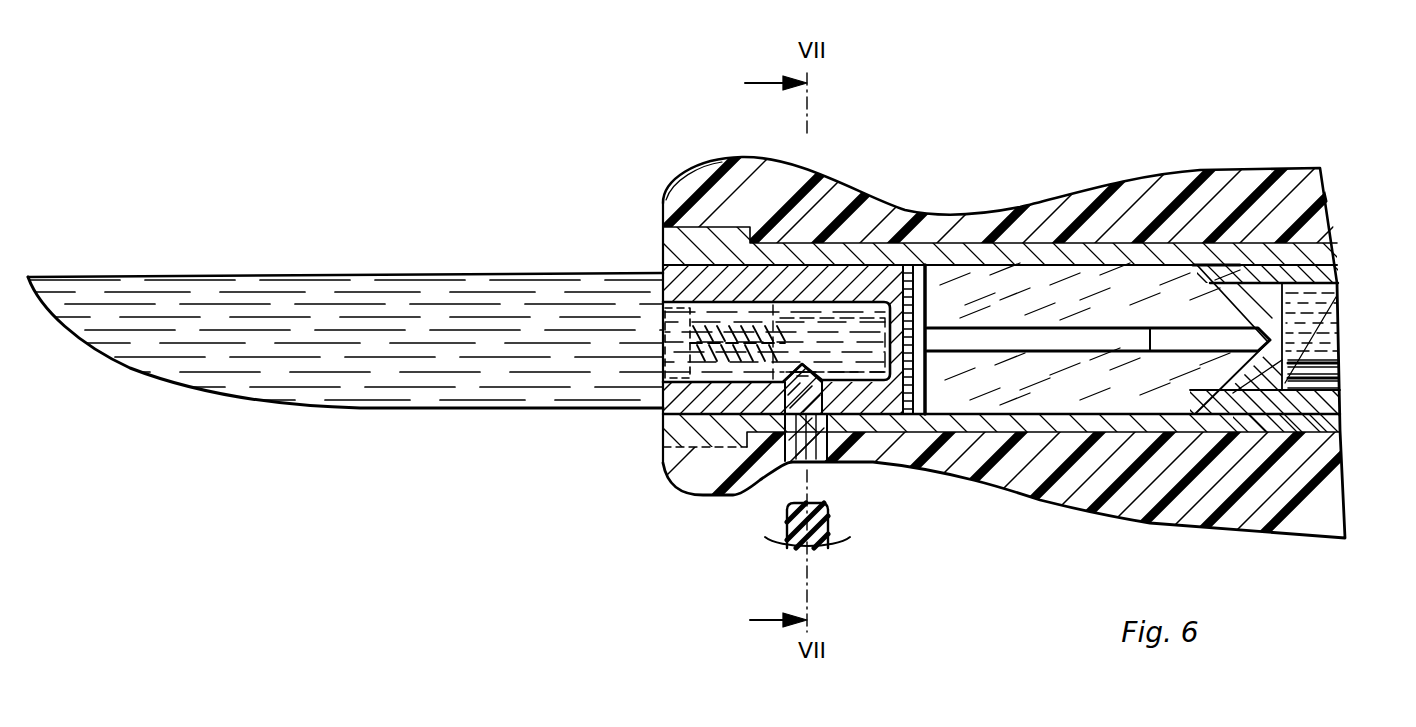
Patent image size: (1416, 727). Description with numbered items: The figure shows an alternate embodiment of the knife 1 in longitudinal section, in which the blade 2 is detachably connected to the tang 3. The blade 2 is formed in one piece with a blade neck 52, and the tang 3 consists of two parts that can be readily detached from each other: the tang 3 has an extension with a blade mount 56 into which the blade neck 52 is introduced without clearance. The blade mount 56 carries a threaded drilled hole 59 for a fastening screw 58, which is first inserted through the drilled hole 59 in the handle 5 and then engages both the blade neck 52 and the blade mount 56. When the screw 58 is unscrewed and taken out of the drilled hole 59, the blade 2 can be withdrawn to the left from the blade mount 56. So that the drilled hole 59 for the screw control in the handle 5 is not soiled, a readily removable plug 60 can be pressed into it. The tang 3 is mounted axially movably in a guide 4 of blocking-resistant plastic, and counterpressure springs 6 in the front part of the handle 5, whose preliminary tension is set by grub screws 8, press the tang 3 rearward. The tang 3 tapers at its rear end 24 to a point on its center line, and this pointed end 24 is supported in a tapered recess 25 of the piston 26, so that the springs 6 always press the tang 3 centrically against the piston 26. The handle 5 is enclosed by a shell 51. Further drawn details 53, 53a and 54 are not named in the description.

The knife 1 is at (597, 157).
The blade 2 is at (362, 410).
The tang 3 is at (1097, 322).
The guide 4 is at (1013, 278).
The handle 5 is at (1235, 192).
The counterpressure springs 6 is at (660, 377).
The grub screws 8 is at (580, 410).
The rear end 24 is at (1337, 288).
The recess 25 is at (1338, 312).
The piston 26 is at (1340, 360).
The shell 51 is at (1042, 505).
The blade neck 52 is at (803, 330).
The sleeve 53 is at (932, 300).
The sleeve shoulder 53a is at (908, 445).
The blade holder 54 is at (700, 405).
The blade mount 56 is at (750, 367).
The fastening screw 58 is at (852, 428).
The drilled hole 59 is at (825, 465).
The plug 60 is at (824, 548).